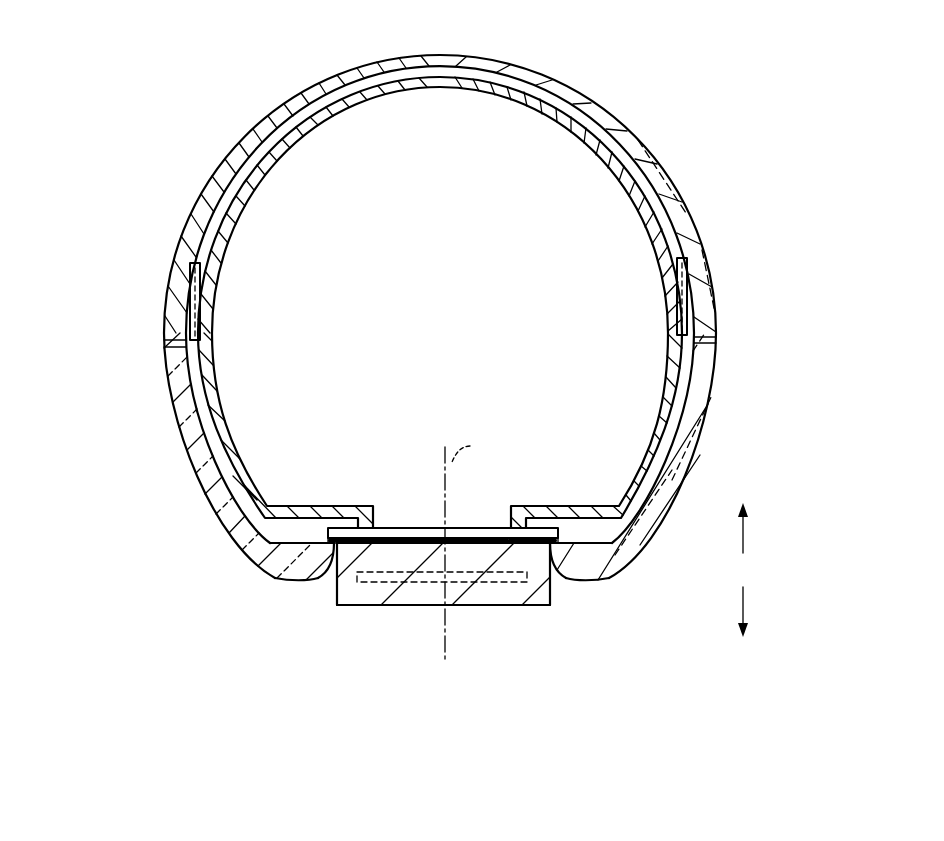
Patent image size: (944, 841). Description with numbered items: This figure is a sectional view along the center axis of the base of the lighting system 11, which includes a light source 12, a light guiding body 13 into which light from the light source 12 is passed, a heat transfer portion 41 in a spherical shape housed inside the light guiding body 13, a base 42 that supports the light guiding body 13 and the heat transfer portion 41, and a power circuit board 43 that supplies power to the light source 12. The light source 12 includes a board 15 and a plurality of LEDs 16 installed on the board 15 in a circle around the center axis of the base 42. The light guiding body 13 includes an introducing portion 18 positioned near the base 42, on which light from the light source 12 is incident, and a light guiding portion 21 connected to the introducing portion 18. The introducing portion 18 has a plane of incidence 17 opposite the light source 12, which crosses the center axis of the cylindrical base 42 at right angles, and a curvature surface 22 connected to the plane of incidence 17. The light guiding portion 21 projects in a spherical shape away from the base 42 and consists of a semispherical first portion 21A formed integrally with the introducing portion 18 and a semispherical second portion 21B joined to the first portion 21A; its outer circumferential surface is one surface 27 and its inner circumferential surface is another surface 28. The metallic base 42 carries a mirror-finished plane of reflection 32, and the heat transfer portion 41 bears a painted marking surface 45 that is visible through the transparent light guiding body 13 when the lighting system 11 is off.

The lighting system 11 is at (713, 138).
The light source 12 is at (412, 497).
The light guiding body 13 is at (628, 140).
The board 15 is at (488, 527).
The LEDs 16 is at (400, 540).
The plane of incidence 17 is at (299, 541).
The introducing portion 18 is at (283, 579).
The light guiding portion 21 is at (78, 298).
The first portion 21A is at (176, 393).
The second portion 21B is at (178, 302).
The curvature surface 22 is at (331, 580).
The one surface 27 is at (174, 451).
The another surface 28 is at (228, 446).
The plane of reflection 32 is at (345, 552).
The heat transfer portion 41 is at (436, 89).
The base 42 is at (427, 590).
The power circuit board 43 is at (468, 586).
The marking surface 45 is at (190, 270).